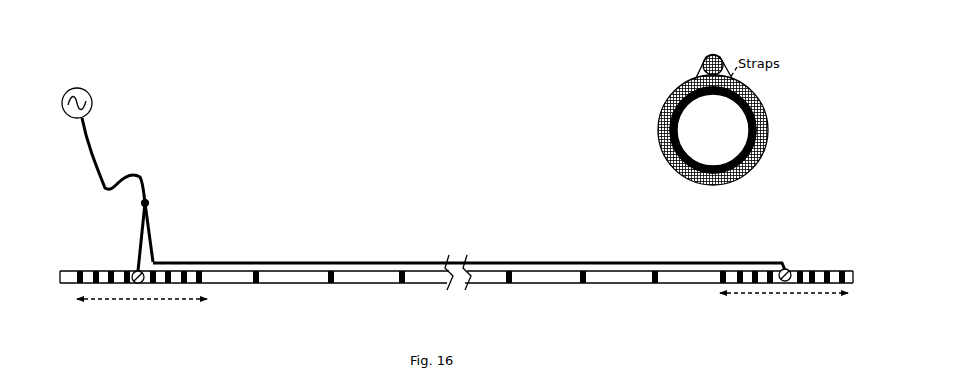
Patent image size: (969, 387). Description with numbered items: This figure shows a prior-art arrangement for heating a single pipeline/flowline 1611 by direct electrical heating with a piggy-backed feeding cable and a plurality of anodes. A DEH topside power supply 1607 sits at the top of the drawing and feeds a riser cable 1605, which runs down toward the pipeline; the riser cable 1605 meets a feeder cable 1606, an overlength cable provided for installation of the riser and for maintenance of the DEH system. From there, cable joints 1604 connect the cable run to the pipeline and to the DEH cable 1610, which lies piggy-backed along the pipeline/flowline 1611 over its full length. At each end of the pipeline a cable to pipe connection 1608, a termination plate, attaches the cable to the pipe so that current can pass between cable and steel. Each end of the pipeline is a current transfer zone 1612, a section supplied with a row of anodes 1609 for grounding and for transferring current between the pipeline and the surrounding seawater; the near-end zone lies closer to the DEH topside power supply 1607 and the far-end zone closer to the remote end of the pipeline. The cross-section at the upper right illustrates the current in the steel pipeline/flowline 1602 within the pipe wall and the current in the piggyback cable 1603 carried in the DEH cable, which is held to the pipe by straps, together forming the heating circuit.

The current in steel pipeline/flowline 1602 is at (659, 131).
The current in piggyback cable 1603 is at (703, 63).
The cable joints 1604 is at (140, 205).
The riser cable 1605 is at (90, 140).
The feeder cable 1606 is at (153, 240).
The DEH topside power supply 1607 is at (80, 95).
The cable to pipe connection 1608 is at (133, 272).
The anodes 1609 is at (653, 285).
The DEH cable 1610 is at (517, 260).
The pipeline/flowline 1611 is at (425, 277).
The current transfer zone 1612 is at (462, 305).